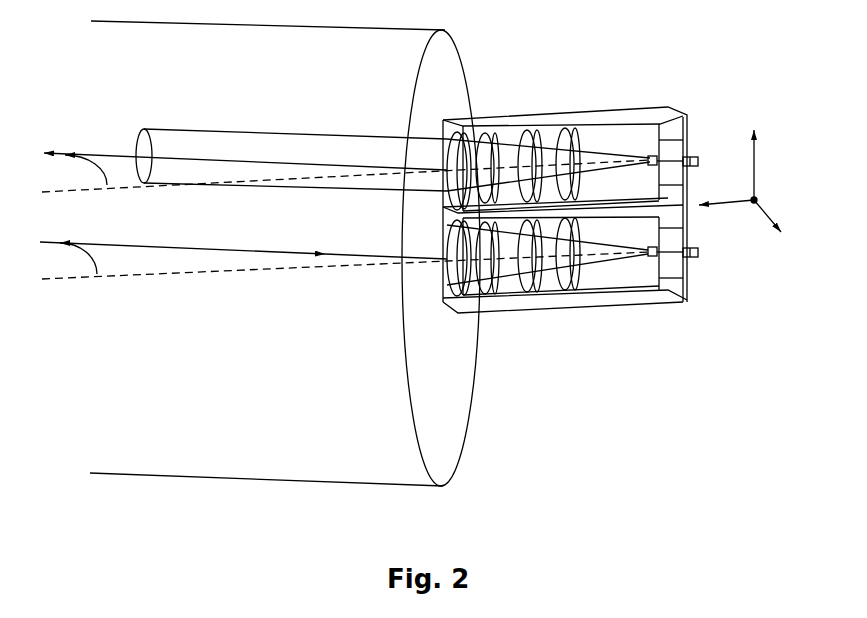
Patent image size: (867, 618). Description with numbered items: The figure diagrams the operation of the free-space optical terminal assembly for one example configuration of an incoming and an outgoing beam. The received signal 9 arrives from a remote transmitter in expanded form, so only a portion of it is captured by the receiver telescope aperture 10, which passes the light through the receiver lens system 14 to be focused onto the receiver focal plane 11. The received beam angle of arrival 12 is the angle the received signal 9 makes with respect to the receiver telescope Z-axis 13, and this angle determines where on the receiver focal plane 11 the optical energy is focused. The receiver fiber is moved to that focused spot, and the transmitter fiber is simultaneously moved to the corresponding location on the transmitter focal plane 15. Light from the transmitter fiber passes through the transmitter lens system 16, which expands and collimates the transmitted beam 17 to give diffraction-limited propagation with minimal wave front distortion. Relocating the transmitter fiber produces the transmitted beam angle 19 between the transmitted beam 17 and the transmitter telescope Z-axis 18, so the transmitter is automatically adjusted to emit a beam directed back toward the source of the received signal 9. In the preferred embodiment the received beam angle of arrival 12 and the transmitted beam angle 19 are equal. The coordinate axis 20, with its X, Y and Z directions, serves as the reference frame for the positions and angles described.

The received signal 9 is at (409, 408).
The receiver telescope aperture 10 is at (447, 288).
The receiver focal plane 11 is at (647, 258).
The received beam angle of arrival 12 is at (70, 268).
The receiver telescope Z-axis 13 is at (345, 270).
The receiver lens system 14 is at (520, 287).
The transmitter focal plane 15 is at (665, 154).
The transmitter lens system 16 is at (536, 146).
The transmitted beam 17 is at (380, 135).
The transmitter telescope Z-axis 18 is at (370, 174).
The transmitted beam angle 19 is at (80, 173).
The coordinate axis 20 is at (762, 185).